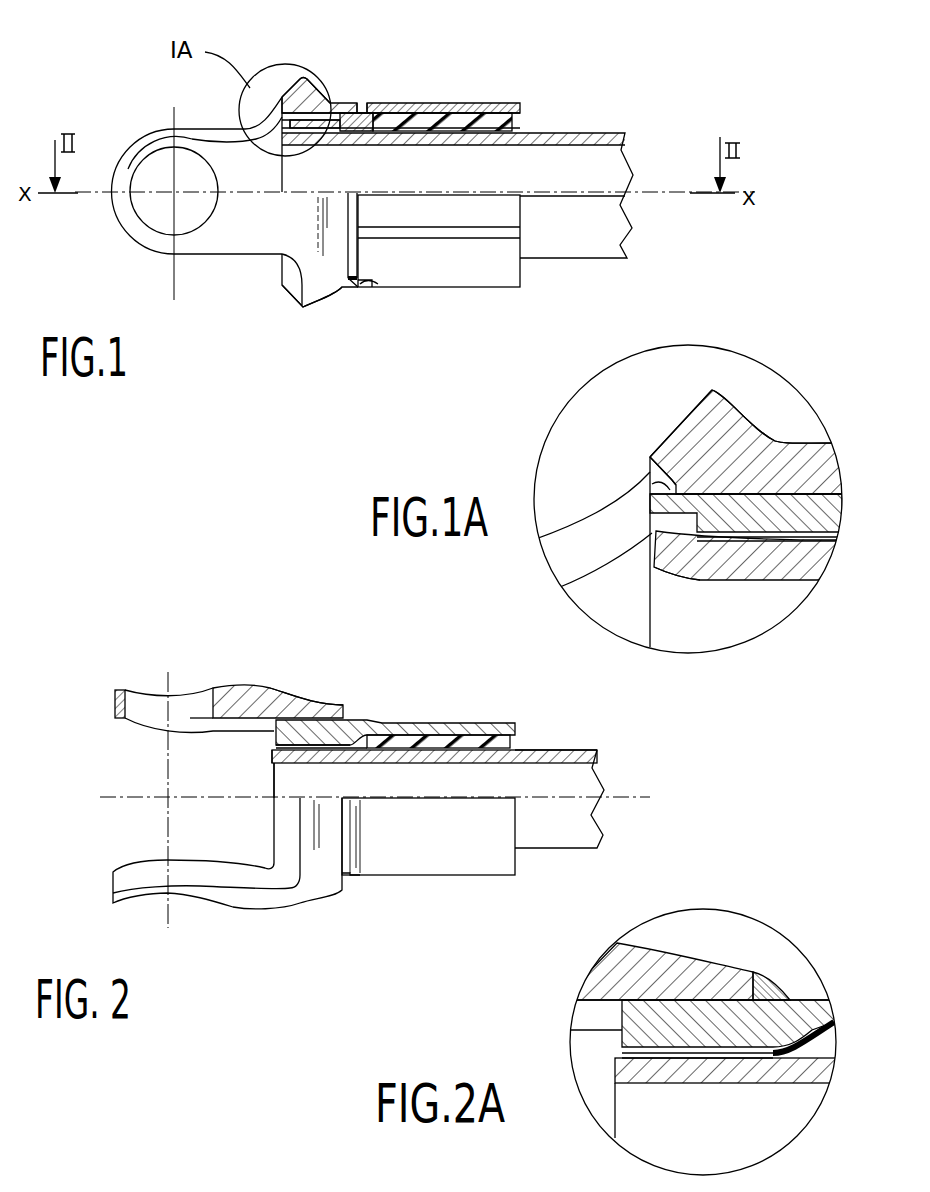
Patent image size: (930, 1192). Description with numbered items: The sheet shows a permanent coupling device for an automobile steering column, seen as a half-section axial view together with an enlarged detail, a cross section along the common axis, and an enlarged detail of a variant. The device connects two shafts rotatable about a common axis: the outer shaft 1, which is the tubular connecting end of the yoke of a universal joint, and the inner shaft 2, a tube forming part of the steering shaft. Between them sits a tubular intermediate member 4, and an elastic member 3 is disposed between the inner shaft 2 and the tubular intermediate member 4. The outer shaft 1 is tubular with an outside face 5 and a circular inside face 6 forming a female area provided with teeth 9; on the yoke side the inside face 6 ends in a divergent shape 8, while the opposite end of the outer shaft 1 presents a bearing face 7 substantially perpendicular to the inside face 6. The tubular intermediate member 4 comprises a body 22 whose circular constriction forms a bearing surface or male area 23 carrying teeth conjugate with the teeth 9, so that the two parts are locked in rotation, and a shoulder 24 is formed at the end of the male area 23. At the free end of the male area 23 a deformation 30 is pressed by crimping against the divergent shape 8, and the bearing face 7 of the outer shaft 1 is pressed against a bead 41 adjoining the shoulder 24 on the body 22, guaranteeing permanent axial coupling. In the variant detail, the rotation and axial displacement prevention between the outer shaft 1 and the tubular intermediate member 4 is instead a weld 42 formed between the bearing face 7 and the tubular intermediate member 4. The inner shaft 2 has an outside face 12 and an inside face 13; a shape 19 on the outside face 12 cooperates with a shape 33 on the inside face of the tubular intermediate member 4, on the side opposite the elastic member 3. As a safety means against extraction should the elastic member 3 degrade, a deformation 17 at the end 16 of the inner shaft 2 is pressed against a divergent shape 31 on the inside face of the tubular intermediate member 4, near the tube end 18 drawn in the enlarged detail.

In FIG. 1, the outer shaft 1 is at (138, 250).
In FIG. 1A, the outer shaft 1 is at (724, 386).
In FIG. 2, the outer shaft 1 is at (229, 680).
In FIG. 2A, the outer shaft 1 is at (663, 942).
In FIG. 1, the inner shaft 2 is at (586, 130).
In FIG. 1A, the inner shaft 2 is at (760, 590).
In FIG. 2, the inner shaft 2 is at (557, 856).
In FIG. 2A, the inner shaft 2 is at (715, 1090).
In FIG. 1, the elastic member 3 is at (470, 118).
In FIG. 2, the elastic member 3 is at (464, 737).
In FIG. 2A, the elastic member 3 is at (810, 1055).
In FIG. 1, the tubular intermediate member 4 is at (413, 103).
In FIG. 1A, the tubular intermediate member 4 is at (776, 530).
In FIG. 2, the tubular intermediate member 4 is at (407, 714).
In FIG. 2A, the tubular intermediate member 4 is at (807, 992).
In FIG. 1, the outside face 5 is at (342, 102).
In FIG. 1A, the outside face 5 is at (805, 443).
In FIG. 1, the inside face 6 is at (308, 130).
In FIG. 1A, the inside face 6 is at (793, 493).
In FIG. 1, the bearing face 7 is at (337, 290).
In FIG. 1A, the divergent shape 8 is at (652, 461).
In FIG. 1, the teeth 9 is at (323, 93).
In FIG. 1A, the teeth 9 is at (767, 492).
In FIG. 2, the outside face 12 is at (560, 749).
In FIG. 2, the inside face 13 is at (399, 764).
In FIG. 2, the end 16 is at (271, 760).
In FIG. 1A, the deformation 17 is at (681, 540).
In FIG. 1A, the tube end 18 is at (664, 573).
In FIG. 2, the shape 19 is at (286, 765).
In FIG. 1, the body 22 is at (470, 289).
In FIG. 1, the male area 23 is at (291, 90).
In FIG. 1A, the male area 23 is at (733, 492).
In FIG. 1, the shoulder 24 is at (372, 283).
In FIG. 1A, the deformation 30 is at (656, 483).
In FIG. 1A, the divergent shape 31 is at (656, 516).
In FIG. 2, the shape 33 is at (310, 726).
In FIG. 1, the bead 41 is at (362, 104).
In FIG. 2A, the weld 42 is at (766, 974).